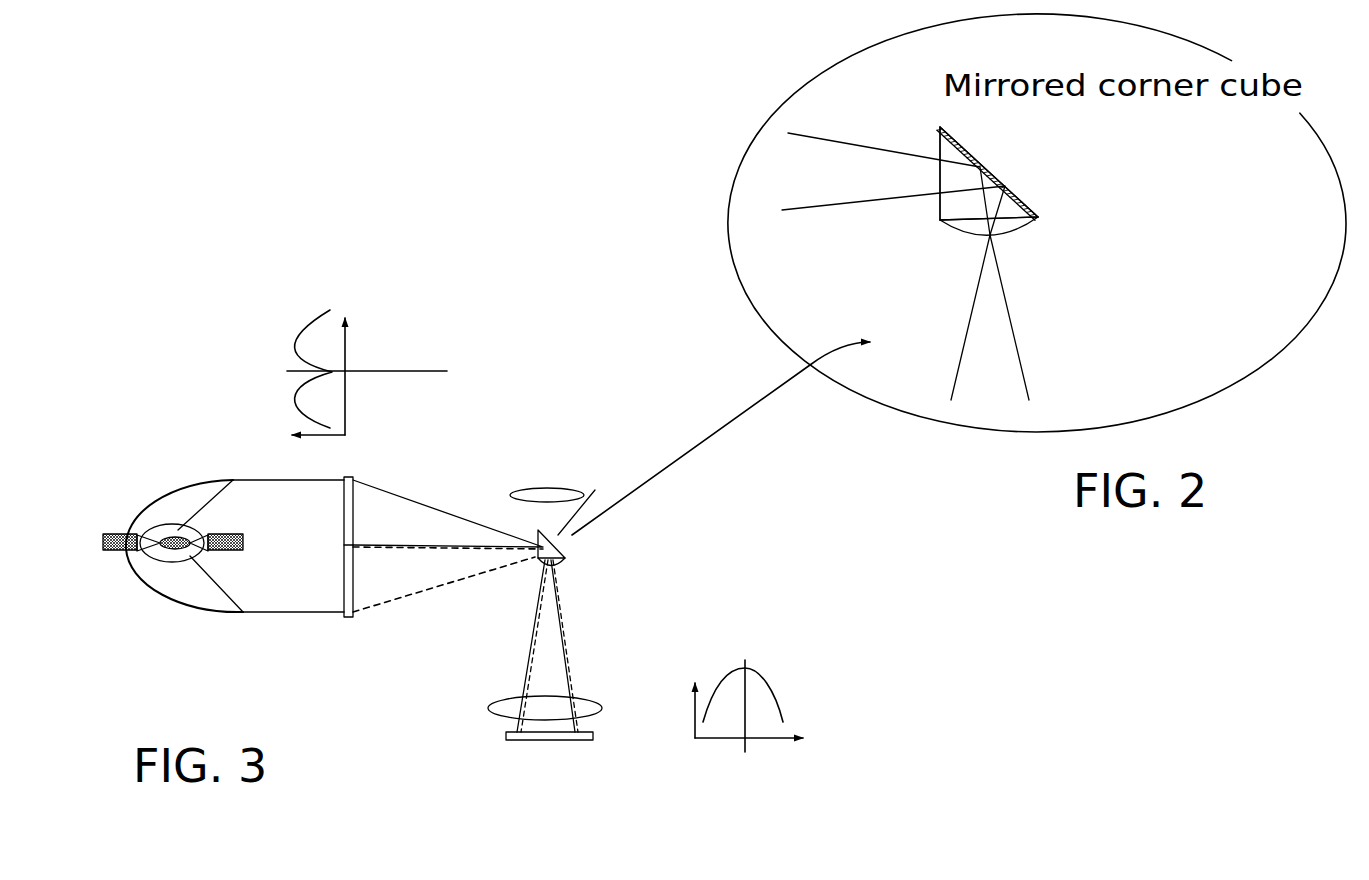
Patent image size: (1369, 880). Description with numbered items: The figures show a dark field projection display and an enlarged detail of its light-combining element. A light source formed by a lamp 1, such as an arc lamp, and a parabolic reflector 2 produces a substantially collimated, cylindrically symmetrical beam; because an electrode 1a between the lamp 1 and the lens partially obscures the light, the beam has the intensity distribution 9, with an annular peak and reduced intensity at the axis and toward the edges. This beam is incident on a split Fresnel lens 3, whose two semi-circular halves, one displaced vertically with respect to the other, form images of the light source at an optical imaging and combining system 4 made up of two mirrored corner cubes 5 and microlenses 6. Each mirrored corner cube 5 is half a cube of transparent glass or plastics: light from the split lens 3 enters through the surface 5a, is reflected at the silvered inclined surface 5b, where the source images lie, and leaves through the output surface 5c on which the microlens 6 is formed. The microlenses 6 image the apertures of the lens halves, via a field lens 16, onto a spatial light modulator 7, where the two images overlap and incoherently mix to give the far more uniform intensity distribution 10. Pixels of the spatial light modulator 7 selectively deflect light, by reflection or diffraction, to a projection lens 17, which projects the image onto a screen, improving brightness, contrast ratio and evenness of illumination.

In FIG. 3, the lamp 1 is at (172, 557).
In FIG. 3, the electrode 1a is at (225, 552).
In FIG. 3, the parabolic reflector 2 is at (142, 573).
In FIG. 3, the split Fresnel lens 3 is at (350, 477).
In FIG. 3, the optical imaging and combining system 4 is at (582, 548).
In FIG. 2, the mirrored corner cube 5 is at (1010, 153).
In FIG. 2, the surface 5a is at (940, 147).
In FIG. 2, the inclined surface 5b is at (1010, 187).
In FIG. 2, the output surface 5c is at (940, 220).
In FIG. 2, the microlens 6 is at (1022, 248).
In FIG. 3, the spatial light modulator 7 is at (572, 742).
In FIG. 3, the intensity distribution 9 is at (388, 352).
In FIG. 3, the intensity distribution 10 is at (812, 707).
In FIG. 3, the field lens 16 is at (500, 703).
In FIG. 3, the projection lens 17 is at (536, 489).